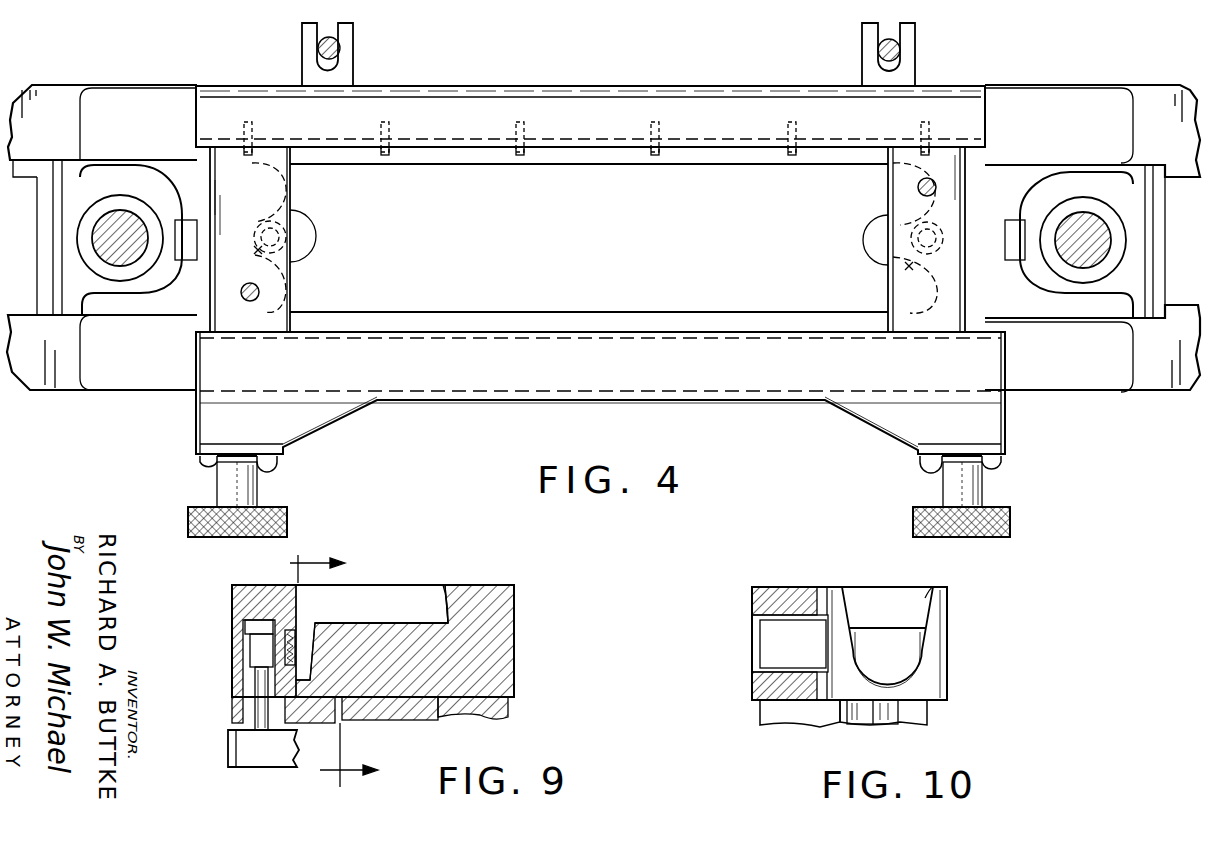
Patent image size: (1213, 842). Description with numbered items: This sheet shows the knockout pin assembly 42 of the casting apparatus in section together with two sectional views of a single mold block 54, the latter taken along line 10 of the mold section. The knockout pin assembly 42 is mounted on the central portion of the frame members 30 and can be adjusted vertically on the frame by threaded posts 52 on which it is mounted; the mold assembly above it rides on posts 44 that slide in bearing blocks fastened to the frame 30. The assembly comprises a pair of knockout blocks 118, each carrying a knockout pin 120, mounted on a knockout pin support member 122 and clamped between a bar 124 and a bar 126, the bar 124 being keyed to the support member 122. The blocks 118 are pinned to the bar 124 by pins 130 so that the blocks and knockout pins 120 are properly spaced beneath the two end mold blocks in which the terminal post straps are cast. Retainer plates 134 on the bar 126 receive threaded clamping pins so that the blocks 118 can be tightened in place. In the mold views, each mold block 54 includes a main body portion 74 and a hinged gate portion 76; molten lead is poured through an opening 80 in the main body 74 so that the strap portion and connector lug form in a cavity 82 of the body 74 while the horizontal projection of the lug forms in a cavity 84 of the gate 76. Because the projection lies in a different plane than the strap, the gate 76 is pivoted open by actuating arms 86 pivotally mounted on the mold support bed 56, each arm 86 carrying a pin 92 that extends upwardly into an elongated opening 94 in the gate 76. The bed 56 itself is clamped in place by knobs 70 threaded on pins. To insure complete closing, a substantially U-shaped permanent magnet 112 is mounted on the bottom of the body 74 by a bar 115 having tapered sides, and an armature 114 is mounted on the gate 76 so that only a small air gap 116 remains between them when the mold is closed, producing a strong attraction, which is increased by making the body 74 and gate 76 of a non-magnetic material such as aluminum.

In FIG. 4, the frame members 30 is at (46, 188).
In FIG. 4, the knockout pin assembly 42 is at (642, 80).
In FIG. 4, the posts 44 is at (116, 225).
In FIG. 4, the threaded posts 52 is at (256, 252).
In FIG. 9, the mold block 54 is at (503, 578).
In FIG. 10, the mold block 54 is at (728, 593).
In FIG. 9, the mold support bed 56 is at (512, 708).
In FIG. 10, the mold support bed 56 is at (762, 724).
In FIG. 4, the knobs 70 is at (287, 512).
In FIG. 9, the main body portion 74 is at (507, 618).
In FIG. 10, the main body portion 74 is at (752, 684).
In FIG. 9, the hinged gate portion 76 is at (248, 595).
In FIG. 9, the opening 80 is at (443, 588).
In FIG. 10, the opening 80 is at (928, 592).
In FIG. 9, the cavity 82 is at (410, 608).
In FIG. 10, the cavity 82 is at (880, 625).
In FIG. 9, the cavity 84 is at (296, 645).
In FIG. 9, the actuating arms 86 is at (236, 751).
In FIG. 9, the pins 92 is at (260, 657).
In FIG. 9, the elongated openings 94 is at (250, 624).
In FIG. 9, the permanent magnet 112 is at (418, 722).
In FIG. 10, the permanent magnet 112 is at (838, 725).
In FIG. 9, the armature 114 is at (233, 709).
In FIG. 10, the bar 115 is at (900, 725).
In FIG. 9, the air gap 116 is at (340, 722).
In FIG. 4, the knockout blocks 118 is at (278, 190).
In FIG. 4, the knockout pin 120 is at (260, 291).
In FIG. 4, the knockout pin support member 122 is at (157, 378).
In FIG. 4, the bar 124 is at (485, 112).
In FIG. 4, the bar 126 is at (572, 355).
In FIG. 4, the pins 130 is at (248, 158).
In FIG. 4, the retainer plates 134 is at (242, 454).
In FIG. 9, the section line 10- 10 is at (338, 678).